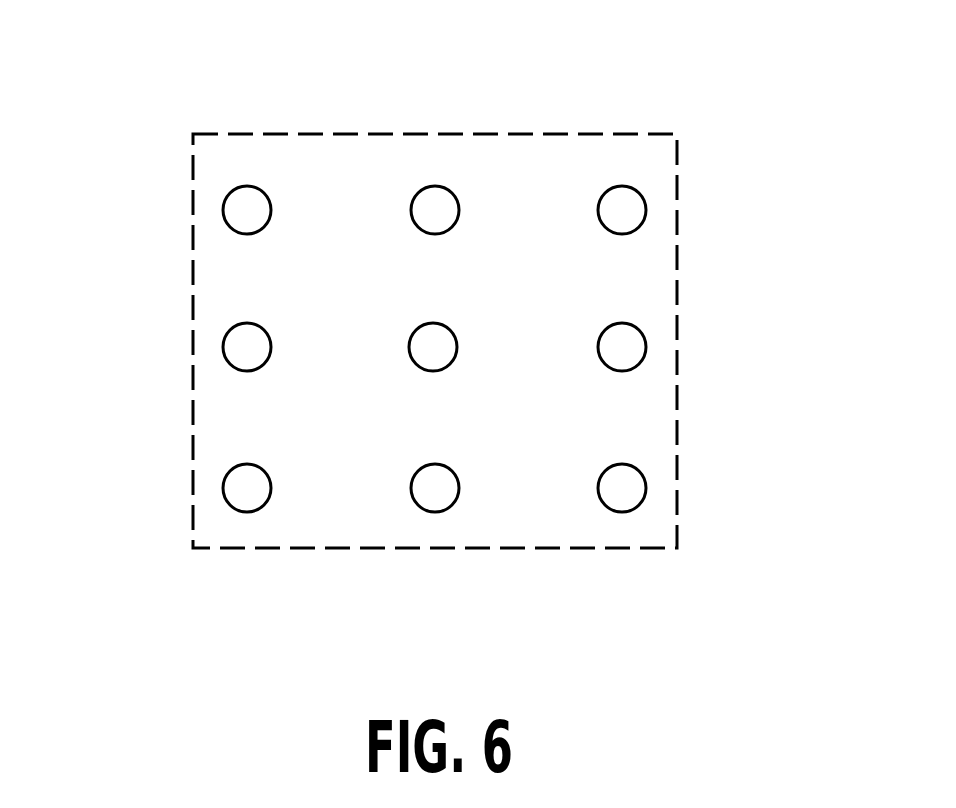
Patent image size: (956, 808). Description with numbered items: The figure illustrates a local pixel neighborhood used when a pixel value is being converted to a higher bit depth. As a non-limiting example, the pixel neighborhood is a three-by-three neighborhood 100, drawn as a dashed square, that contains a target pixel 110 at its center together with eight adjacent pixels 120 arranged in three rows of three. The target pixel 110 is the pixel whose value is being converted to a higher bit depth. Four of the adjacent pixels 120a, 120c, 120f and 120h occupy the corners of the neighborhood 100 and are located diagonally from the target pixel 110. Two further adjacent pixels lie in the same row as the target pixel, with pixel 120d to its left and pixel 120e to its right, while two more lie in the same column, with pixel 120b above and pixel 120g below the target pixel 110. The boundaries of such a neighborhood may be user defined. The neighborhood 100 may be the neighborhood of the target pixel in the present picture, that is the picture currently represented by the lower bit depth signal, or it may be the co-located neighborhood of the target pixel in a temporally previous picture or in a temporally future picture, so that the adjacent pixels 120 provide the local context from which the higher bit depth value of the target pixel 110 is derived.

The three-by-three neighborhood 100 is at (285, 134).
The target pixel 110 is at (454, 335).
The adjacent pixels 120 is at (223, 207).
The adjacent pixel 120a is at (247, 185).
The adjacent pixel 120b is at (451, 196).
The adjacent pixel 120c is at (621, 186).
The adjacent pixel 120d is at (246, 323).
The adjacent pixel 120e is at (627, 372).
The adjacent pixel 120f is at (246, 464).
The adjacent pixel 120g is at (411, 490).
The adjacent pixel 120h is at (624, 512).